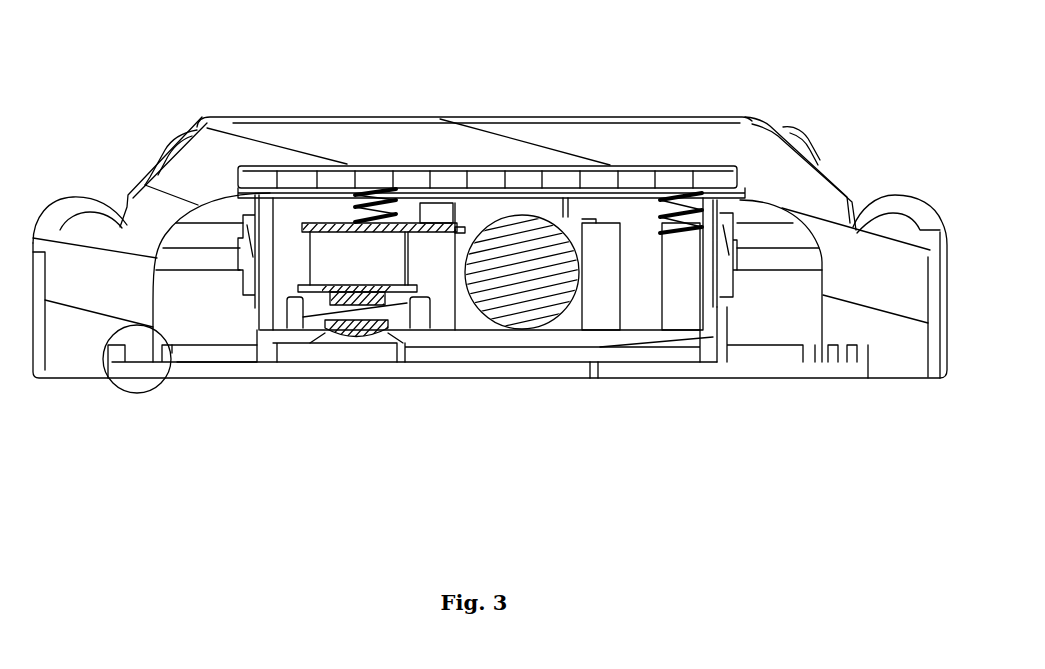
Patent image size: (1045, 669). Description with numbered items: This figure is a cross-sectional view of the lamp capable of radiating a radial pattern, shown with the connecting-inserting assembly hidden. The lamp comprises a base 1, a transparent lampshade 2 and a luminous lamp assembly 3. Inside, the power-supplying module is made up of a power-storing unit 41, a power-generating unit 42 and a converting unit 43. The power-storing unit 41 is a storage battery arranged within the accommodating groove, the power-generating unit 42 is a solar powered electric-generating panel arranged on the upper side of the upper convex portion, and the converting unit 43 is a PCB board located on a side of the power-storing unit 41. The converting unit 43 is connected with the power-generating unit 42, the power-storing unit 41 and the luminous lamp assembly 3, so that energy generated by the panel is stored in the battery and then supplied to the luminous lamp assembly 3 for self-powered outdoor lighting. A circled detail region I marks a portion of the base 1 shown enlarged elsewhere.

The base 1 is at (752, 370).
The transparent lampshade 2 is at (655, 147).
The luminous lamp assembly 3 is at (253, 213).
The power-storing unit 41 is at (528, 300).
The power-generating unit 42 is at (523, 182).
The converting unit 43 is at (382, 222).
The detail region I is at (135, 393).